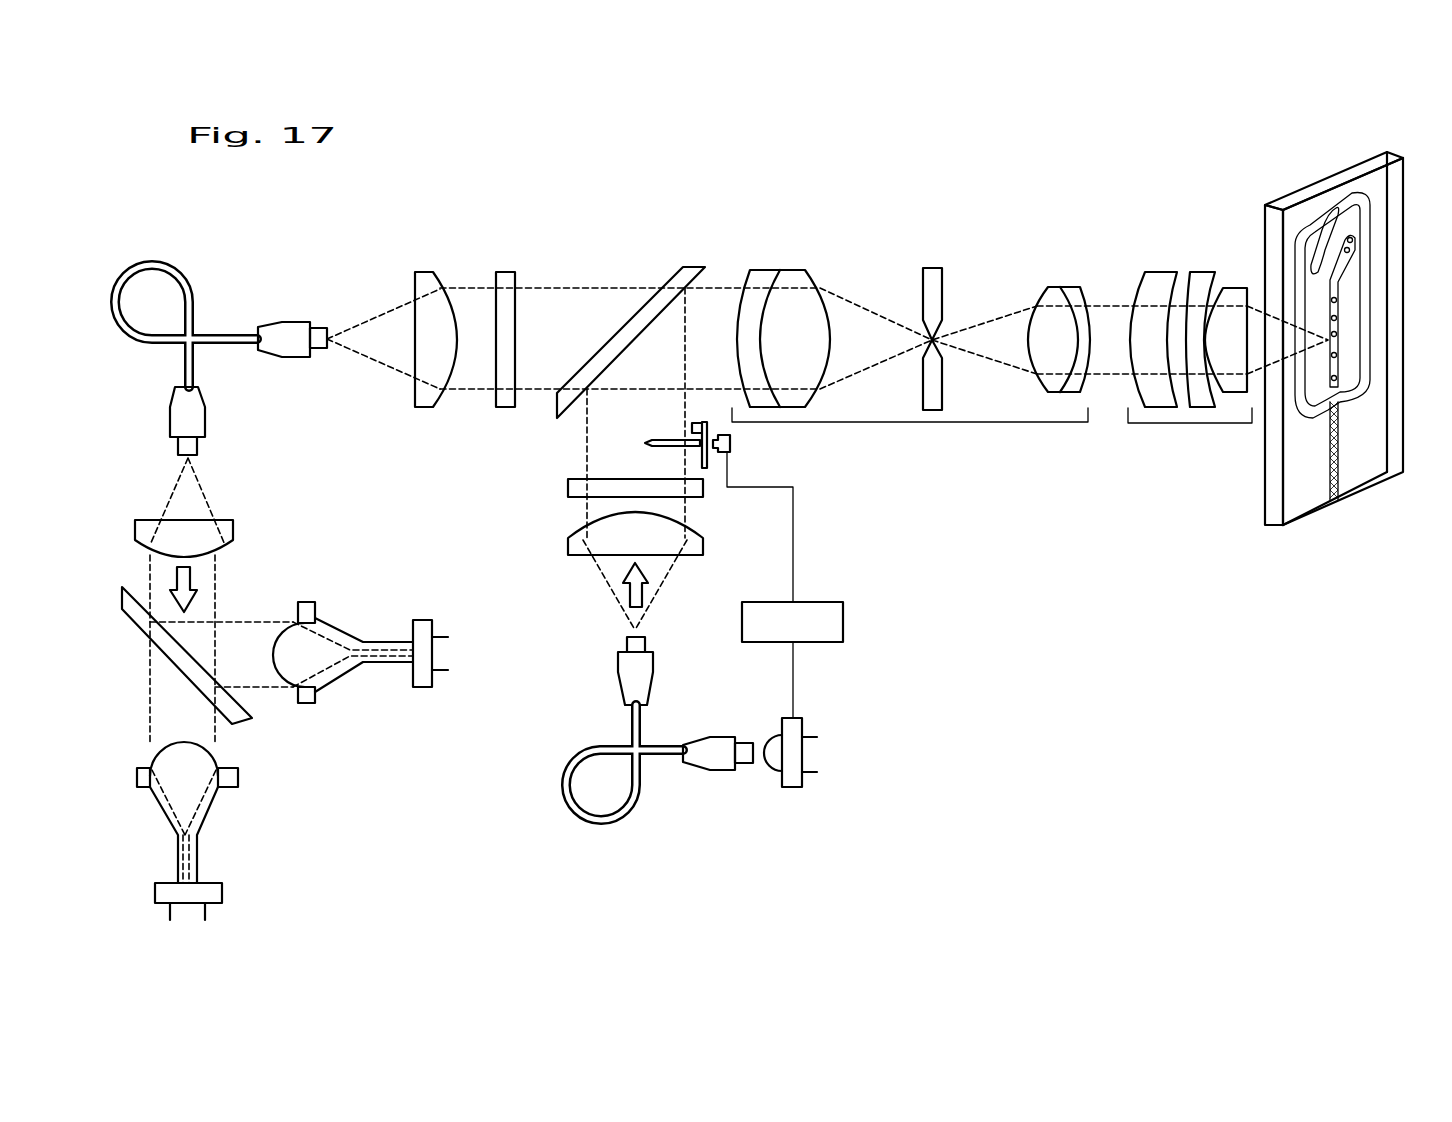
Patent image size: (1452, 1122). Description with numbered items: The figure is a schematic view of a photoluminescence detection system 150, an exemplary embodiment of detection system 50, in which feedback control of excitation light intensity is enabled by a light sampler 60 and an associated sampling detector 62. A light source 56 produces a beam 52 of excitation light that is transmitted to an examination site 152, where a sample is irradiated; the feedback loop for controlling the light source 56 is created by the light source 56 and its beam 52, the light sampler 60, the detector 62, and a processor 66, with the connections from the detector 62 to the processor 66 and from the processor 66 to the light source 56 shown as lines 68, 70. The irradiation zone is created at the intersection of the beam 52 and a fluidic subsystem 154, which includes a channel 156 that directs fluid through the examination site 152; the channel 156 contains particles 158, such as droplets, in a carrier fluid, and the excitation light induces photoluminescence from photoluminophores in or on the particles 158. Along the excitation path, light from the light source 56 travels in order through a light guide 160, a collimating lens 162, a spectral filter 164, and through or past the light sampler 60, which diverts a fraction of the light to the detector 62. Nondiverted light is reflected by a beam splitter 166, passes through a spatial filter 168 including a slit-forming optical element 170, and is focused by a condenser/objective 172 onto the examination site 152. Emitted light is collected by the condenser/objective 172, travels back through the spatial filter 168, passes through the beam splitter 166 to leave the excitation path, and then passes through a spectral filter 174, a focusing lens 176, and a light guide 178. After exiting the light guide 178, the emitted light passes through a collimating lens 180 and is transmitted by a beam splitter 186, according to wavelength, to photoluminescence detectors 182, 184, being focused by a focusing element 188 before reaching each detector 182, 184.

The detection system 50 is at (566, 158).
The photoluminescence detection system 150 is at (566, 207).
The examination site 152 is at (1347, 332).
The fluidic subsystem 154 is at (1357, 330).
The channel 156 is at (1336, 312).
The particles 158 is at (1334, 468).
The light guide 160 is at (567, 800).
The collimating lens 162 is at (568, 545).
The spectral filter 164 is at (568, 488).
The beam splitter 166 is at (697, 266).
The spatial filter 168 is at (935, 423).
The slit-forming optical element 170 is at (935, 267).
The condenser/objective 172 is at (1192, 424).
The spectral filter 174 is at (509, 271).
The focusing lens 176 is at (427, 271).
The light guide 178 is at (118, 311).
The collimating lens 180 is at (233, 530).
The photoluminescence detector 182 is at (423, 620).
The photoluminescence detector 184 is at (220, 885).
The beam splitter 186 is at (122, 598).
The focusing element 188 is at (305, 602).
The beam 52 is at (583, 418).
The light source 56 is at (790, 788).
The light sampler 60 is at (673, 440).
The detector 62 is at (733, 445).
The processor 66 is at (778, 635).
The signal line 68 is at (793, 540).
The control line 70 is at (793, 678).